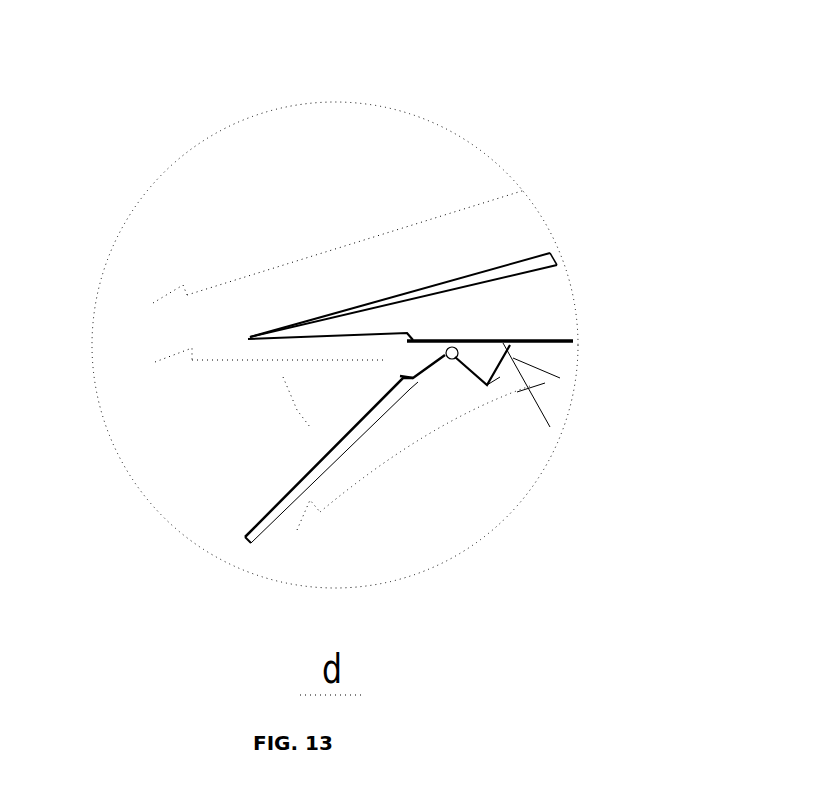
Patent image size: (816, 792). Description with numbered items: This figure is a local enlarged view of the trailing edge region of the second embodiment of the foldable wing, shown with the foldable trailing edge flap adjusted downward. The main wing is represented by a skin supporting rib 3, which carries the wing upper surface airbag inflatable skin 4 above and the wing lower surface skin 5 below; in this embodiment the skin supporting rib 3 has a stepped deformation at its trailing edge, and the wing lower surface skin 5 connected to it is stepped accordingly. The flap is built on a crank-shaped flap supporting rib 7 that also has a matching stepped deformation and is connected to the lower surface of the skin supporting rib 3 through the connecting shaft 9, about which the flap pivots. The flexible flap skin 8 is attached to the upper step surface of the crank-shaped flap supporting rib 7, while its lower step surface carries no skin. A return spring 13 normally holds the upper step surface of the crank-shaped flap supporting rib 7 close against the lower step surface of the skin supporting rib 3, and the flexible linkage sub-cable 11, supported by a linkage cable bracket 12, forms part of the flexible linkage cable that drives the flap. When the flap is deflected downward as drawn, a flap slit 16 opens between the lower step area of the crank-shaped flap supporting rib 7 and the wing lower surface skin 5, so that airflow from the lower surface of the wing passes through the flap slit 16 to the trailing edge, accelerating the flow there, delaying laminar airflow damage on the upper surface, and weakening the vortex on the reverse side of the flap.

The skin supporting rib 3 is at (566, 282).
The wing upper surface airbag inflatable skin 4 is at (503, 262).
The wing lower surface skin 5 is at (573, 345).
The crank-shaped flap supporting rib 7 is at (247, 537).
The flexible flap skin 8 is at (270, 505).
The connecting shaft 9 is at (455, 357).
The flexible linkage sub-cable 11 is at (515, 355).
The linkage cable bracket 12 is at (510, 350).
The return spring 13 is at (486, 383).
The flap slit 16 is at (418, 370).